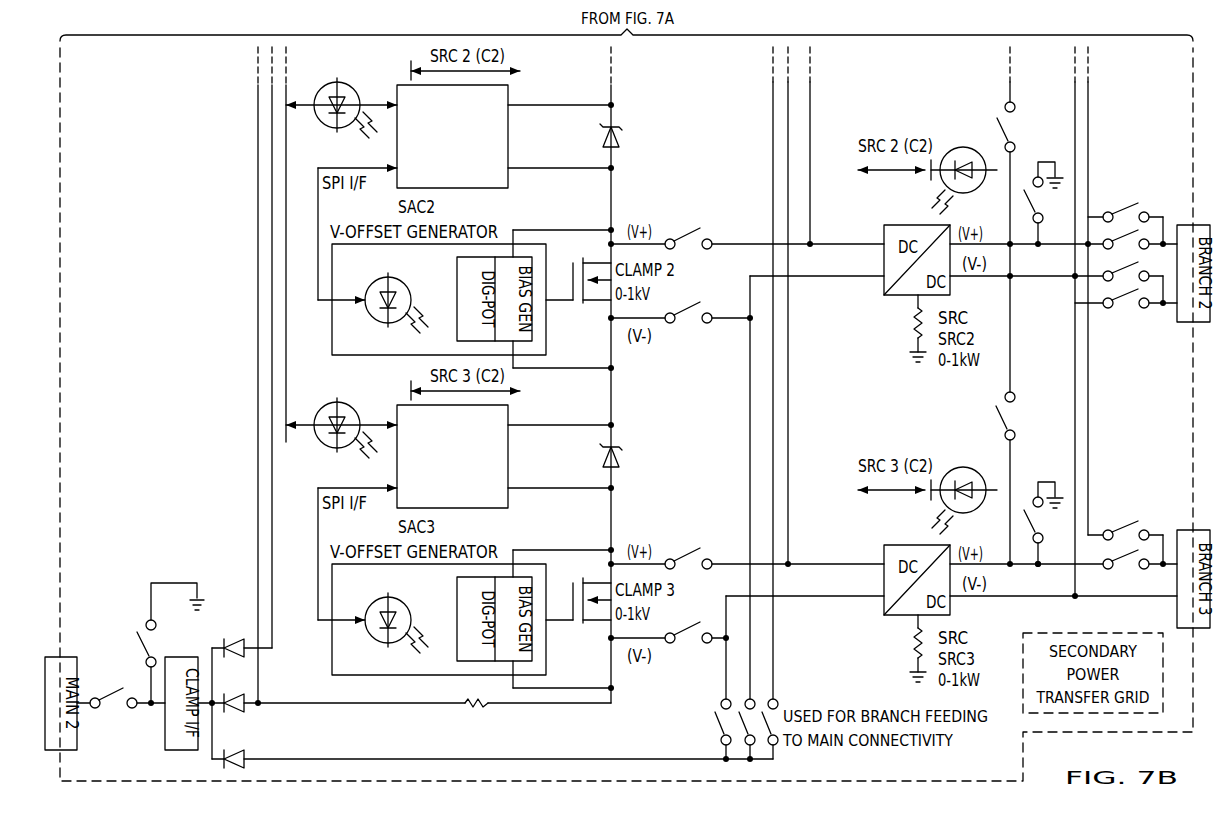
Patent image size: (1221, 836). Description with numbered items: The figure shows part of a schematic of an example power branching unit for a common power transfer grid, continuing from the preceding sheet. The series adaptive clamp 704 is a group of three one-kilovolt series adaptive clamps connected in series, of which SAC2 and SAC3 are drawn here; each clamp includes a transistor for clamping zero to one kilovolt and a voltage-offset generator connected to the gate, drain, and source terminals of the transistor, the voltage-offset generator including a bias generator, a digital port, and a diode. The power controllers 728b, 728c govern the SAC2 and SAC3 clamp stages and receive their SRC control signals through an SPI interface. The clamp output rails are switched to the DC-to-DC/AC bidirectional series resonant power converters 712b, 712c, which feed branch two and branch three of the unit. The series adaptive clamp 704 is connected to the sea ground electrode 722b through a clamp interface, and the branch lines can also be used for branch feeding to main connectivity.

The power controller 728b is at (477, 175).
The power controller 728c is at (477, 495).
The DC-to-DC/AC bidirectional series resonant power converter 712b is at (893, 297).
The DC-to-DC/AC bidirectional series resonant power converter 712c is at (893, 617).
The sea ground electrode 722b is at (176, 583).
The series adaptive clamp (SAC) 704 is at (627, 713).